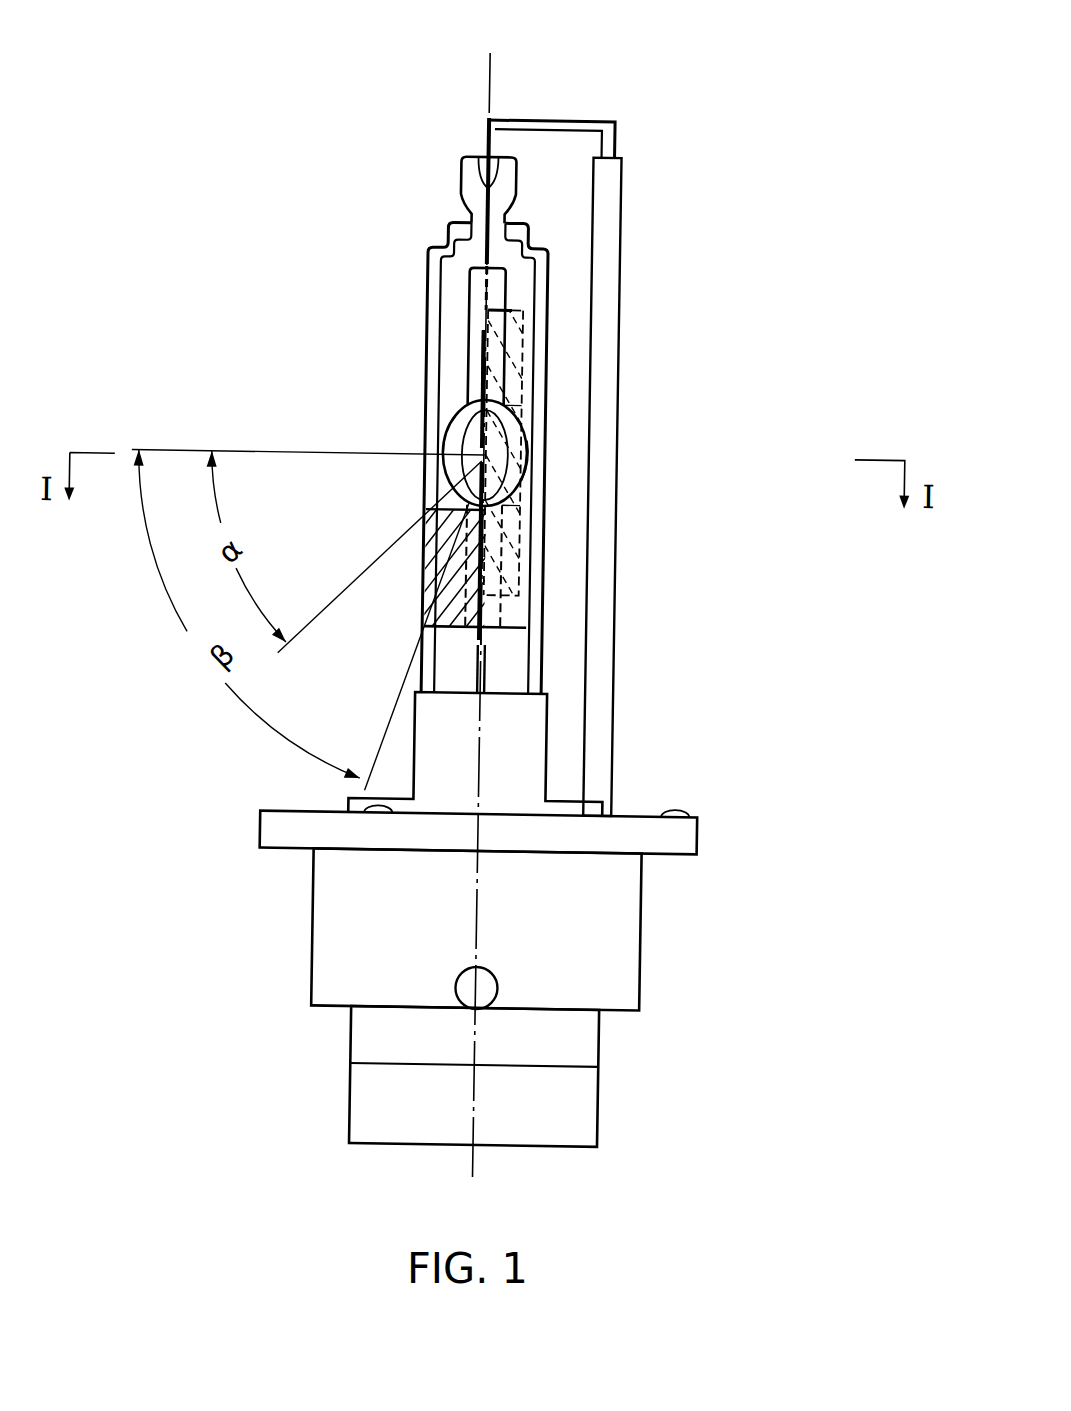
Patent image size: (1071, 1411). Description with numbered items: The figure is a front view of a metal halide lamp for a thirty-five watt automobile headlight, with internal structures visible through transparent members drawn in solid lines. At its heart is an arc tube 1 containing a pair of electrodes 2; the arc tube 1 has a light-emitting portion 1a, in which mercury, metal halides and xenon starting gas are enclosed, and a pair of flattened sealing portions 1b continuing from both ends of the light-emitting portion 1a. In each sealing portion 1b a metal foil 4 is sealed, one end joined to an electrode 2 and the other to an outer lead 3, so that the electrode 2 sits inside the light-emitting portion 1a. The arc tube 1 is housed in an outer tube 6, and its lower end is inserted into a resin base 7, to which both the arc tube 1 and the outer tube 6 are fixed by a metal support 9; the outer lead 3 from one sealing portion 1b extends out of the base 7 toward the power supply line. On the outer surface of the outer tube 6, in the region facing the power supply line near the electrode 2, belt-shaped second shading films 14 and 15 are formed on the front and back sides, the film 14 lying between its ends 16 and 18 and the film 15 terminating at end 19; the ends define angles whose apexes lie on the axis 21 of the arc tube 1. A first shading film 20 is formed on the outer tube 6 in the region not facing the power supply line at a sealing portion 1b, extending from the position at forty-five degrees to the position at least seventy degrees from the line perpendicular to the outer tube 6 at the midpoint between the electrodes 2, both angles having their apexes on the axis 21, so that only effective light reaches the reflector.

The arc tube 1 is at (440, 489).
The light-emitting portion 1a is at (445, 408).
The sealing portion 1b is at (474, 292).
The electrode 2 is at (474, 399).
The outer lead 3 is at (446, 188).
The metal foil 4 is at (491, 291).
The outer tube 6 is at (543, 357).
The base 7 is at (614, 938).
The support 9 is at (533, 759).
The second shading film 14 is at (523, 463).
The second shading film 15 is at (520, 322).
The end of shading film 16 is at (471, 380).
The end of shading film 18 is at (503, 413).
The end of shading film 19 is at (522, 500).
The first shading film 20 is at (421, 584).
The axis of the arc tube 21 is at (480, 80).